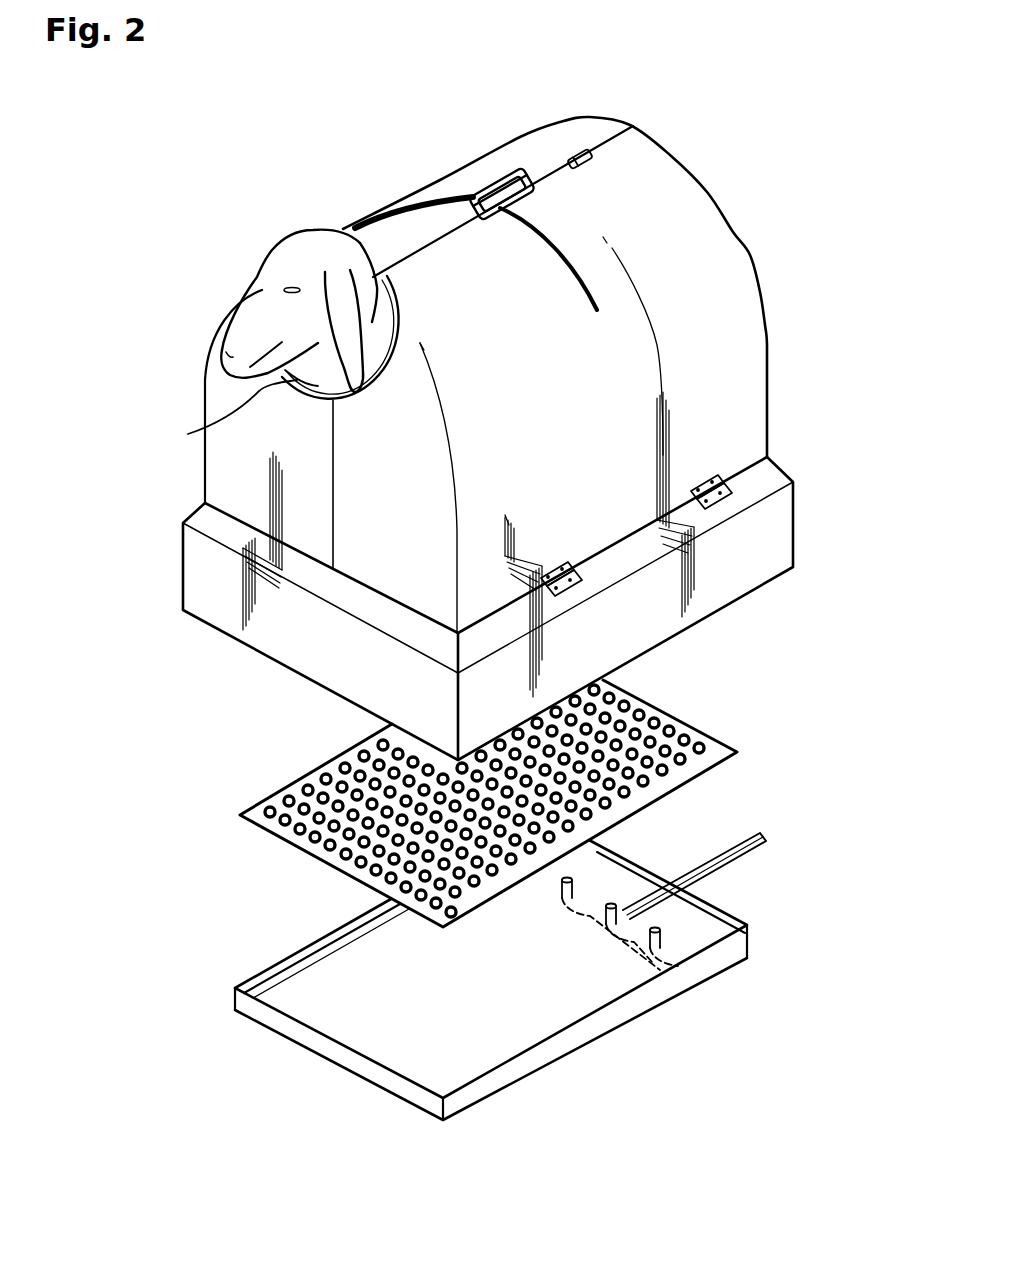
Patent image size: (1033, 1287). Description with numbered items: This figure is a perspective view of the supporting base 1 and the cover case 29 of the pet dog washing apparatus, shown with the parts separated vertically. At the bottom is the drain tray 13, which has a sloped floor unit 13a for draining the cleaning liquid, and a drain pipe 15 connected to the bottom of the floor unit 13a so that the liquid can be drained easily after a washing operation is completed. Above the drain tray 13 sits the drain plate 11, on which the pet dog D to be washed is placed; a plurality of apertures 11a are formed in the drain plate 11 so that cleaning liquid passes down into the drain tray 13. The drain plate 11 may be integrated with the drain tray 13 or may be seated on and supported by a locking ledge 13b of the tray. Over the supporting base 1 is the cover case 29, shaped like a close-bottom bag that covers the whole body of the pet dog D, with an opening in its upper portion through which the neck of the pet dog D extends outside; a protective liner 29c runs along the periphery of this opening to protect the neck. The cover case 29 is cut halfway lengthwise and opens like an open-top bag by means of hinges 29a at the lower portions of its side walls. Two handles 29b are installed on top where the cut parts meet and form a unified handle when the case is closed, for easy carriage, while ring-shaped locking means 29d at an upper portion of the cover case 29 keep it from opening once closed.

The supporting base 1 is at (224, 803).
The drain plate 11 is at (525, 801).
The apertures 11a is at (706, 748).
The drain tray 13 is at (477, 980).
The floor unit 13a is at (505, 1035).
The locking ledge 13b is at (323, 955).
The drain pipe 15 is at (723, 870).
The cover case 29 is at (735, 262).
The hinges 29a is at (735, 498).
The handles 29b is at (493, 167).
The protective liner 29c is at (198, 433).
The ring-shaped locking means 29d is at (576, 150).
The pet dog D is at (280, 255).